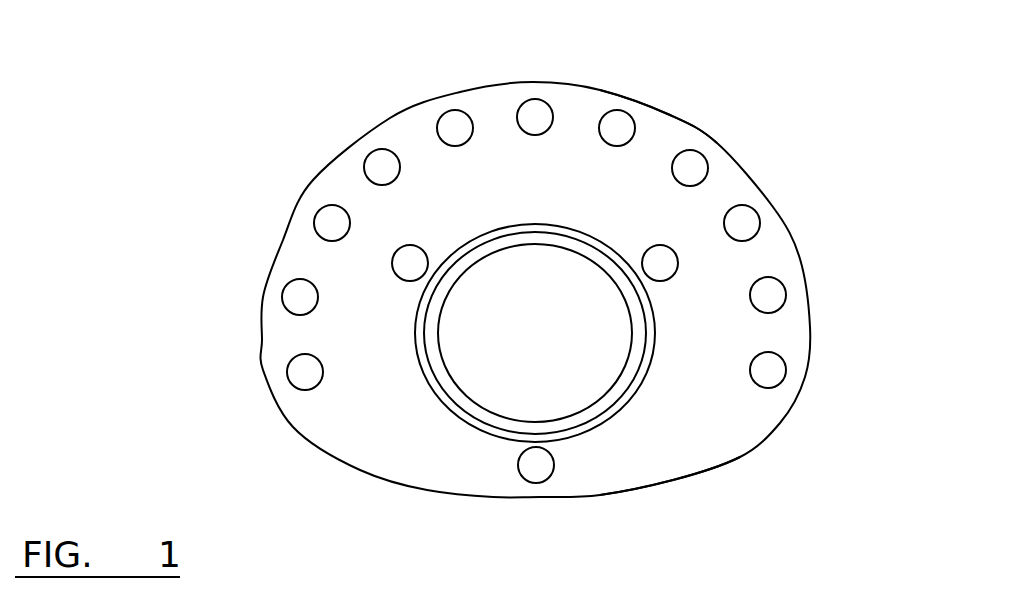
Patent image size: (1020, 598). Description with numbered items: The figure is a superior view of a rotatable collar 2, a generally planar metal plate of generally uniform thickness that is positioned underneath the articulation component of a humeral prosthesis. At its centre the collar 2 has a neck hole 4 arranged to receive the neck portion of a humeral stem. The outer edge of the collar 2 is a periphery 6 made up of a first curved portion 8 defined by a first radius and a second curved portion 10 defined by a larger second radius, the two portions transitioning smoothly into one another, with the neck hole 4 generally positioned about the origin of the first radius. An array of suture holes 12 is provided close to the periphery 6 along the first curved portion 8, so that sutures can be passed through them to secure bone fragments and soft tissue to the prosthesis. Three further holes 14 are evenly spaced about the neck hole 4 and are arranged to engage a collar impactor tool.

The rotatable collar 2 is at (706, 118).
The neck hole 4 is at (485, 359).
The periphery 6 is at (780, 427).
The first curved portion 8 is at (665, 106).
The second curved portion 10 is at (667, 487).
The suture holes 12 is at (455, 125).
The holes 14 is at (405, 266).